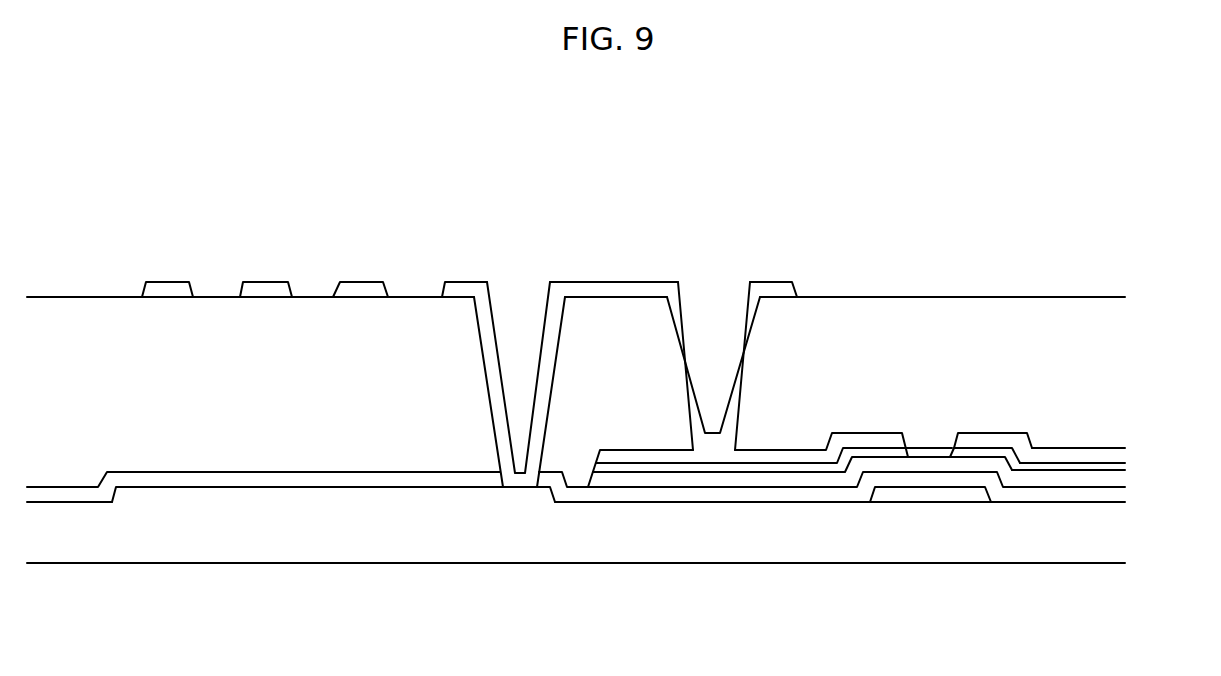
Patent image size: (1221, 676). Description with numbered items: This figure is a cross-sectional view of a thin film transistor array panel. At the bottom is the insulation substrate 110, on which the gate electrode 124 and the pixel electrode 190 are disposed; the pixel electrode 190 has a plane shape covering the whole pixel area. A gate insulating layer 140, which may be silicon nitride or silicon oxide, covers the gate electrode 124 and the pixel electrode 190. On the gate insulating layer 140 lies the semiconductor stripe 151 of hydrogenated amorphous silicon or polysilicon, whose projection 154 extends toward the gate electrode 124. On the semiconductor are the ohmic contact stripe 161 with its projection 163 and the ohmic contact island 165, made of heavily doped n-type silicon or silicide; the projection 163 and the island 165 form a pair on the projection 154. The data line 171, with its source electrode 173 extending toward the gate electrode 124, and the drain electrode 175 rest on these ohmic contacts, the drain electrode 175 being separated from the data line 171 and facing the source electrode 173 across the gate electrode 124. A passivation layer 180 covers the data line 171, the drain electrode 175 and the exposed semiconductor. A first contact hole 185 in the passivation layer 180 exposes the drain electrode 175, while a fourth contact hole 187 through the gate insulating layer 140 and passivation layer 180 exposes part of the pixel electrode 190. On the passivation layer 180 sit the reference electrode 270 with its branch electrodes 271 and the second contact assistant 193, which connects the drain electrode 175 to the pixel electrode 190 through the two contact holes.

The insulation substrate 110 is at (1113, 547).
The gate electrode 124 is at (968, 495).
The gate insulating layer 140 is at (1127, 498).
The semiconductor stripe 151 is at (1120, 480).
The projection 154 is at (903, 463).
The ohmic contact stripe 161 is at (1130, 465).
The projection 163 is at (970, 453).
The ohmic contact island 165 is at (743, 468).
The data line 171 is at (1078, 455).
The source electrode 173 is at (992, 442).
The drain electrode 175 is at (648, 455).
The passivation layer 180 is at (824, 318).
The first contact hole 185 is at (677, 342).
The fourth contact hole 187 is at (480, 330).
The pixel electrode 190 is at (407, 495).
The second contact assistant 193 is at (622, 290).
The reference electrode 270 is at (265, 288).
The branch electrode 271 is at (191, 288).